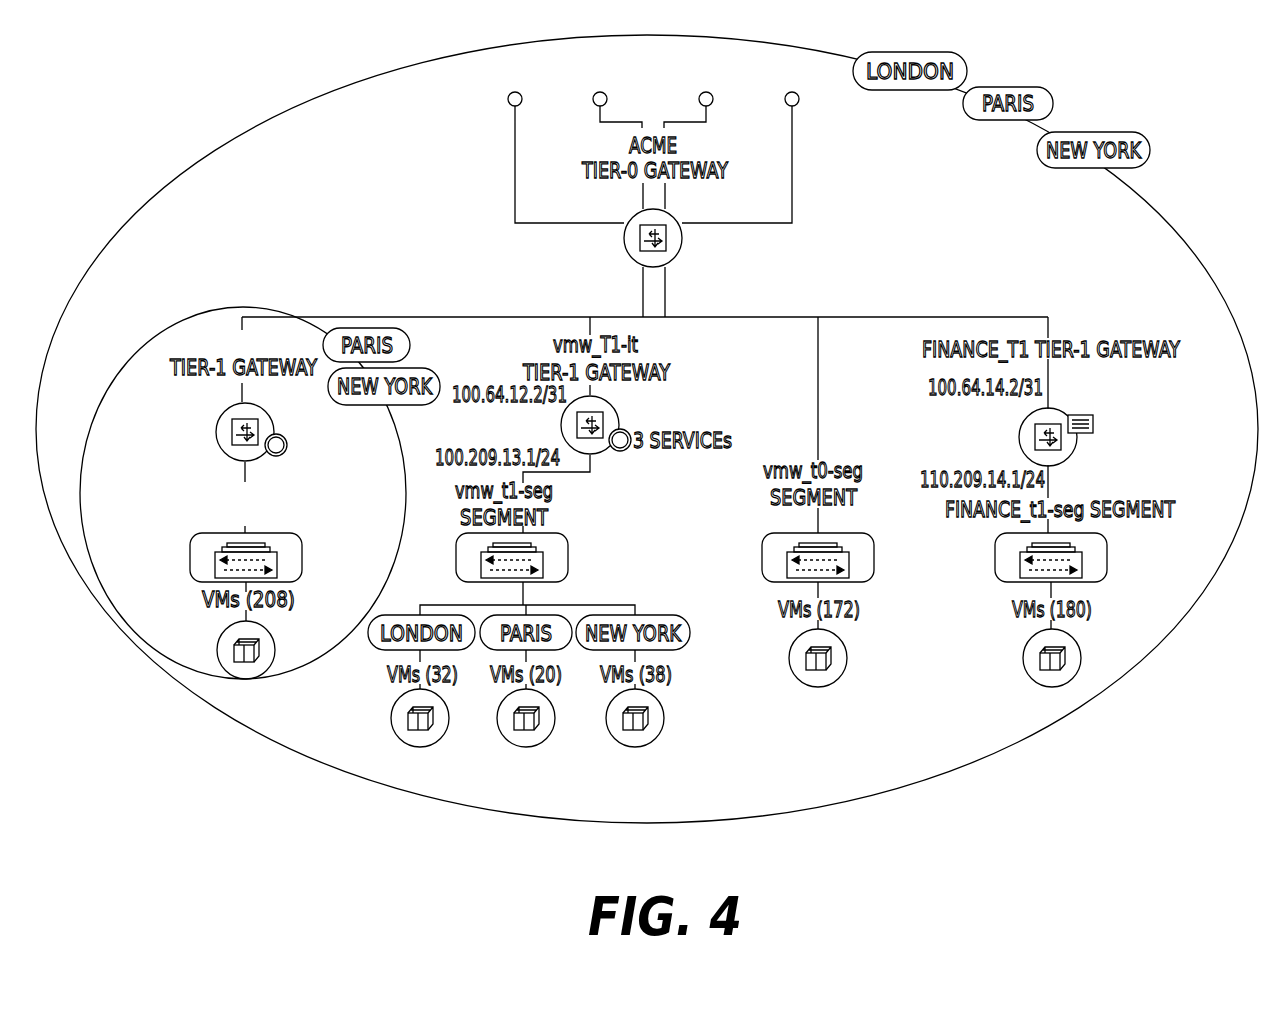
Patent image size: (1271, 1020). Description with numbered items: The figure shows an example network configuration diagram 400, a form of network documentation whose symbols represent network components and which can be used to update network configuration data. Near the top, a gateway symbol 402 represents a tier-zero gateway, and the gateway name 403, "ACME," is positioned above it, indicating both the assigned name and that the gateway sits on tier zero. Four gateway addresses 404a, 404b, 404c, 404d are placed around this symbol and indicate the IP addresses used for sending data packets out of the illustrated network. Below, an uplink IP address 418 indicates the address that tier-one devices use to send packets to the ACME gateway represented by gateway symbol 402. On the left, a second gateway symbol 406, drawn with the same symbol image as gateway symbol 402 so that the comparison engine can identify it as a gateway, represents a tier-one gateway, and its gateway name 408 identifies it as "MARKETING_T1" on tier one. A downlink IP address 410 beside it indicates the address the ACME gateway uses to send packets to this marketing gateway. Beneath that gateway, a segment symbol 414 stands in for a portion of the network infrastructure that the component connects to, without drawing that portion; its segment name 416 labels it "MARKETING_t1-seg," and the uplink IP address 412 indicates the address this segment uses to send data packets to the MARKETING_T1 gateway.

The network configuration diagram 400 is at (250, 88).
The gateway symbol 402 is at (683, 258).
The gateway name 403 is at (700, 143).
The gateway address 404a is at (503, 243).
The gateway address 404b is at (542, 188).
The gateway address 404c is at (766, 188).
The gateway address 404d is at (800, 242).
The gateway symbol 406 is at (215, 433).
The gateway name 408 is at (208, 325).
The downlink IP address 410 is at (132, 388).
The uplink IP address 412 is at (138, 480).
The segment symbol 414 is at (303, 548).
The segment name 416 is at (335, 490).
The uplink IP address 418 is at (945, 270).